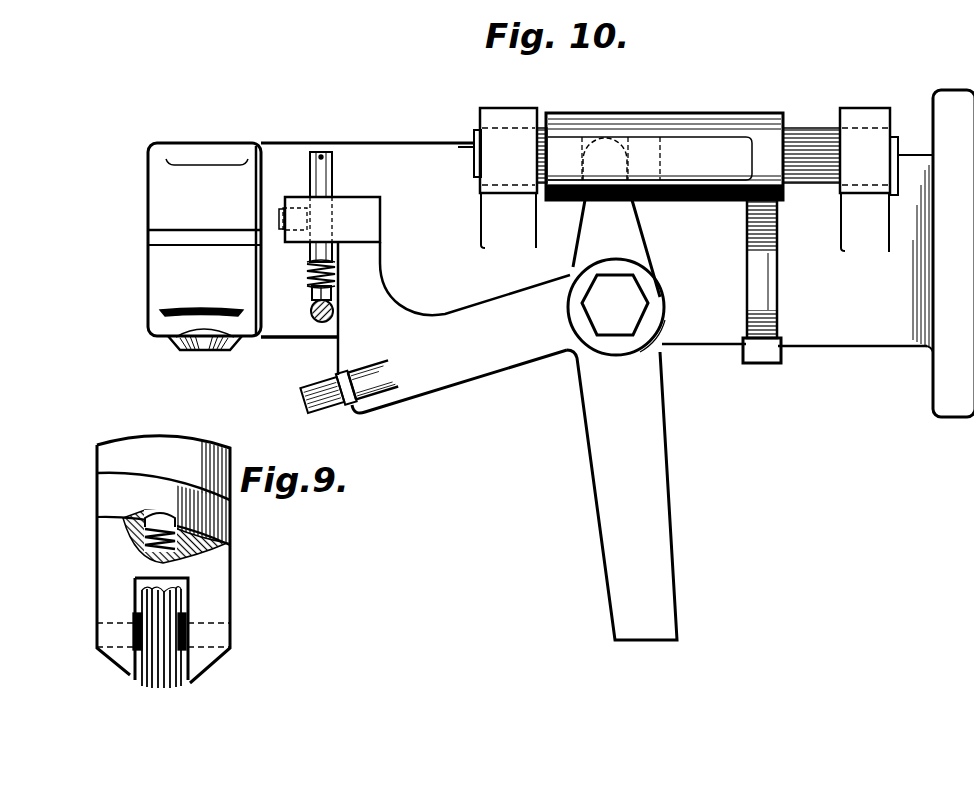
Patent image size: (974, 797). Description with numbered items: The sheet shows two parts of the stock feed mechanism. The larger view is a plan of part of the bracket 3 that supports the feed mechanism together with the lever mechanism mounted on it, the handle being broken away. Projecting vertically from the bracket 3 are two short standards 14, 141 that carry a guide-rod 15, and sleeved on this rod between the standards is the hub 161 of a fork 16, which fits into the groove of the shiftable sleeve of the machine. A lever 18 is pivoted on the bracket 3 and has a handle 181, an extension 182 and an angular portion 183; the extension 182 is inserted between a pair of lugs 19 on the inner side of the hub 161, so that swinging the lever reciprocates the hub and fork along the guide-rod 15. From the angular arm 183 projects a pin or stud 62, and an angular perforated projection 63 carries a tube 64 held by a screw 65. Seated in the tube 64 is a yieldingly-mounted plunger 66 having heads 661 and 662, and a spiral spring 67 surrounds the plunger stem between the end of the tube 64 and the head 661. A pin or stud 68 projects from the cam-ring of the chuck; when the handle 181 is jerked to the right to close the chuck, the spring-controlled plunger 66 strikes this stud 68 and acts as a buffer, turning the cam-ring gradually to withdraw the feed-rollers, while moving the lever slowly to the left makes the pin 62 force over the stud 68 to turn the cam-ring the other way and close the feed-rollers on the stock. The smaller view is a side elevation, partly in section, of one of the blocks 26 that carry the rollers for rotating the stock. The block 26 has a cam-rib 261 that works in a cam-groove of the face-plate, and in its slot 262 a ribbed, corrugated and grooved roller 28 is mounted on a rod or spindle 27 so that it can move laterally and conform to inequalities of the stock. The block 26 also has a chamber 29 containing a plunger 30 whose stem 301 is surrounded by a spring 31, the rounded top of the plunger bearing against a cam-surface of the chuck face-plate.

In FIG. 10, the bracket 3 is at (617, 253).
In FIG. 10, the short standard 14 is at (497, 178).
In FIG. 10, the short standard 141 is at (869, 180).
In FIG. 10, the guide-rod 15 is at (815, 190).
In FIG. 10, the fork 16 is at (763, 290).
In FIG. 10, the hub of the fork 161 is at (664, 156).
In FIG. 10, the lever 18 is at (652, 305).
In FIG. 10, the handle 181 is at (622, 495).
In FIG. 10, the extension 182 is at (616, 248).
In FIG. 10, the angular portion 183 is at (430, 344).
In FIG. 10, the lugs 19 is at (580, 146).
In FIG. 10, the pin or stud 62 is at (304, 399).
In FIG. 10, the angular perforated projection 63 is at (332, 219).
In FIG. 10, the tube 64 is at (333, 182).
In FIG. 10, the screw 65 is at (303, 224).
In FIG. 10, the plunger 66 is at (330, 277).
In FIG. 10, the head 661 is at (311, 294).
In FIG. 10, the head 662 is at (333, 158).
In FIG. 10, the spiral spring 67 is at (336, 272).
In FIG. 10, the pin or stud 68 is at (312, 320).
In FIG. 9, the block 26 is at (163, 559).
In FIG. 9, the cam-rib 261 is at (106, 464).
In FIG. 9, the slot 262 is at (170, 584).
In FIG. 9, the rod or spindle 27 is at (133, 638).
In FIG. 9, the roller 28 is at (173, 608).
In FIG. 9, the chamber 29 is at (197, 540).
In FIG. 9, the plunger 30 is at (177, 530).
In FIG. 9, the stem 301 is at (143, 533).
In FIG. 9, the spring 31 is at (143, 545).